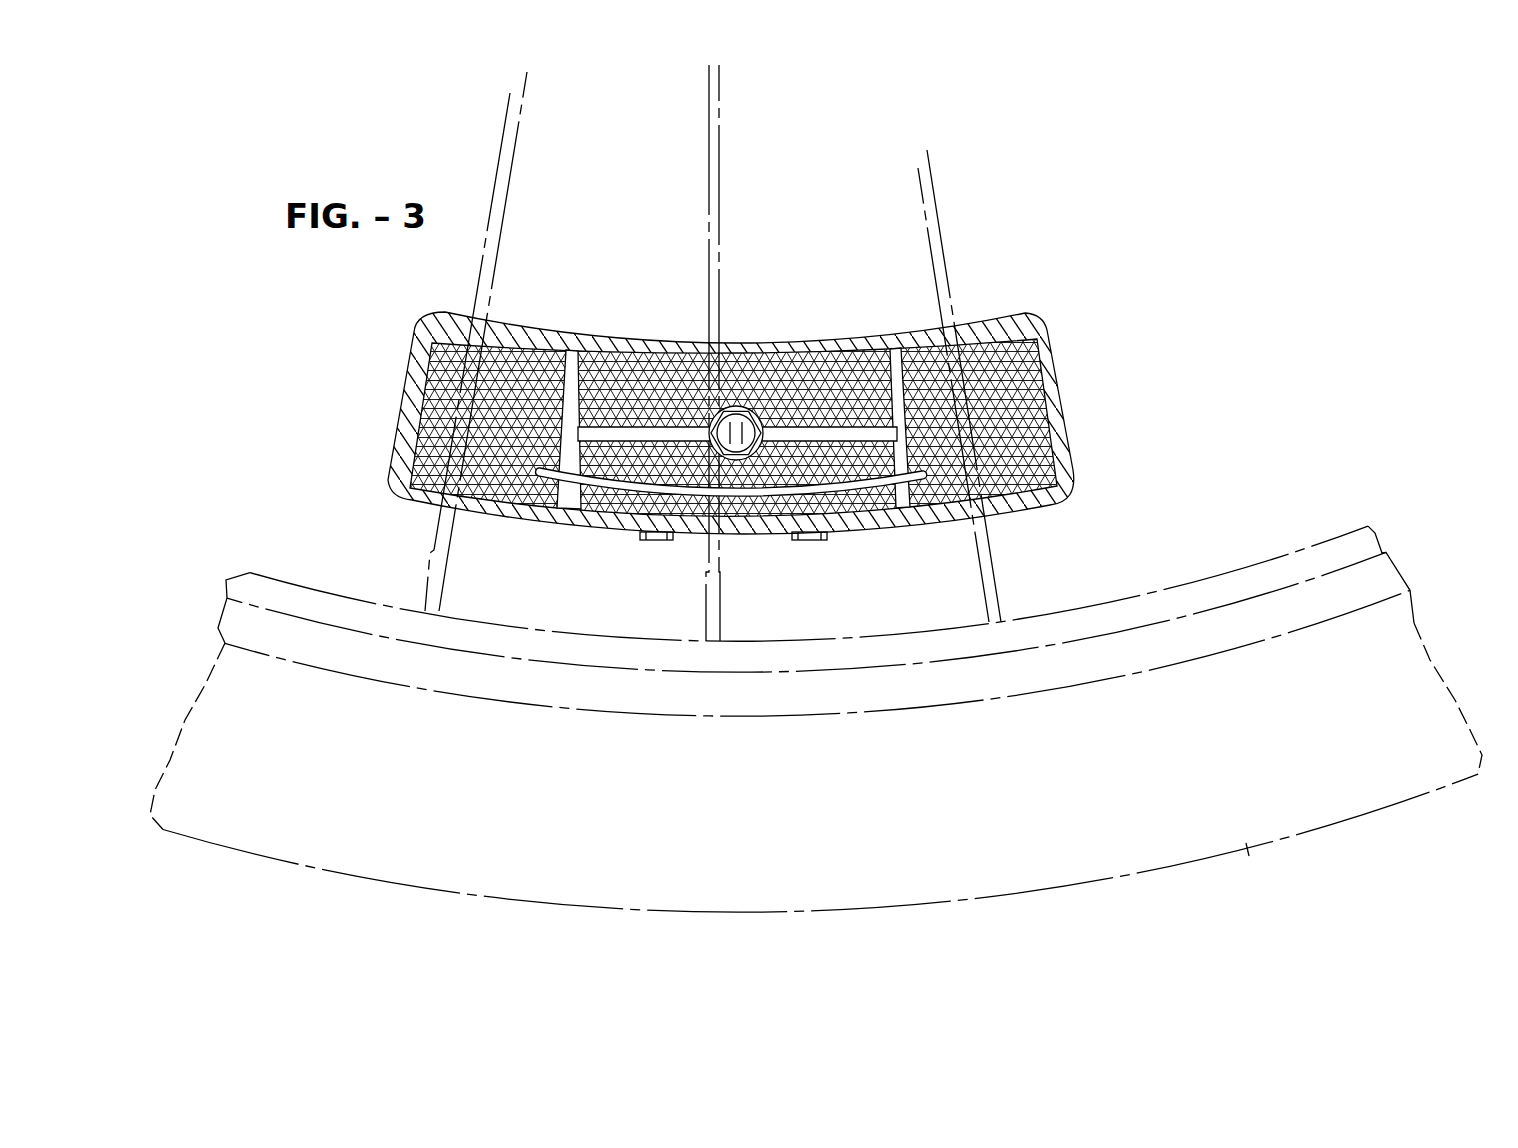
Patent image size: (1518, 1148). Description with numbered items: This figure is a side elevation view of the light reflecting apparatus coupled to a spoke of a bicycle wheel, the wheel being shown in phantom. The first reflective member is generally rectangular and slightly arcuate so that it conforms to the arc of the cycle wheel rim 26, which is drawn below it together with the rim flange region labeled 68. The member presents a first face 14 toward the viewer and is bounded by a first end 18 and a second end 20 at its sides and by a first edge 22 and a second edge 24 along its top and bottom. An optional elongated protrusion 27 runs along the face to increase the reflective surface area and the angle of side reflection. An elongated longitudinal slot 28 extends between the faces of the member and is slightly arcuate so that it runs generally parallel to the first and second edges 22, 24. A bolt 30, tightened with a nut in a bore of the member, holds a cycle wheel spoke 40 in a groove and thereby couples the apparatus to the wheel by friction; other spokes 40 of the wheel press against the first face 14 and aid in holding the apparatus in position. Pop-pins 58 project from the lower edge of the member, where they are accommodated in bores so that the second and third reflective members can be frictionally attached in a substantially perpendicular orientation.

The first face 14 is at (1030, 398).
The first end 18 is at (728, 423).
The second end 20 is at (405, 395).
The first edge 22 is at (887, 530).
The second edge 24 is at (797, 338).
The cycle wheel rim 26 is at (1314, 546).
The elongated protrusion 27 is at (606, 437).
The elongated longitudinal slot 28 is at (547, 478).
The bolt 30 is at (728, 425).
The cycle wheel spoke 40 is at (720, 187).
The pop-pins 58 is at (642, 540).
The rim flange 68 is at (1248, 847).